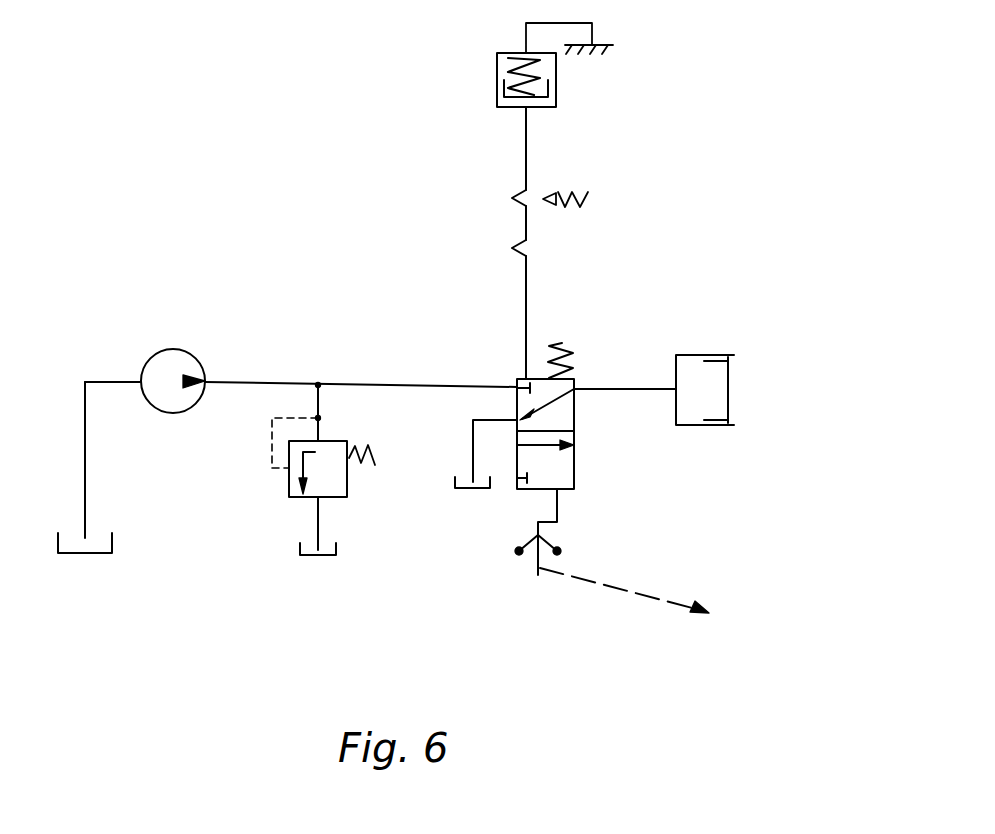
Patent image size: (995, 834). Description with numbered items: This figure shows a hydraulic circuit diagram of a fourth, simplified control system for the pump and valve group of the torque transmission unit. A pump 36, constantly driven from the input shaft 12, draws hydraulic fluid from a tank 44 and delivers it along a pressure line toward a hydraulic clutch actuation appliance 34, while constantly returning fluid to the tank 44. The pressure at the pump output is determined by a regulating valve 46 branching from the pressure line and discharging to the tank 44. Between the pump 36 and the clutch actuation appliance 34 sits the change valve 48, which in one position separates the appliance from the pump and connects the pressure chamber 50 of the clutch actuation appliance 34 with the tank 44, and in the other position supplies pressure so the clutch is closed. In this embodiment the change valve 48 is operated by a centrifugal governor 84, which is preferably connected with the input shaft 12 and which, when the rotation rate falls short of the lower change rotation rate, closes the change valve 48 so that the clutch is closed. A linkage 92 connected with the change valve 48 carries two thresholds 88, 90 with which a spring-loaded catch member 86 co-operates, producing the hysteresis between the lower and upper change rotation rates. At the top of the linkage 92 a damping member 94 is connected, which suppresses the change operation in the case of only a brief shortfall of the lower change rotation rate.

The input shaft 12 is at (635, 590).
The hydraulic clutch actuation appliance 34 is at (690, 355).
The pump 36 is at (197, 360).
The tank 44 is at (97, 556).
The regulating valve 46 is at (347, 485).
The change valve 48 is at (574, 423).
The pressure chamber 50 is at (708, 383).
The centrifugal governor 84 is at (548, 540).
The spring-loaded catch member 86 is at (548, 191).
The threshold 88 is at (510, 198).
The threshold 90 is at (510, 250).
The linkage 92 is at (526, 290).
The damping member 94 is at (504, 83).